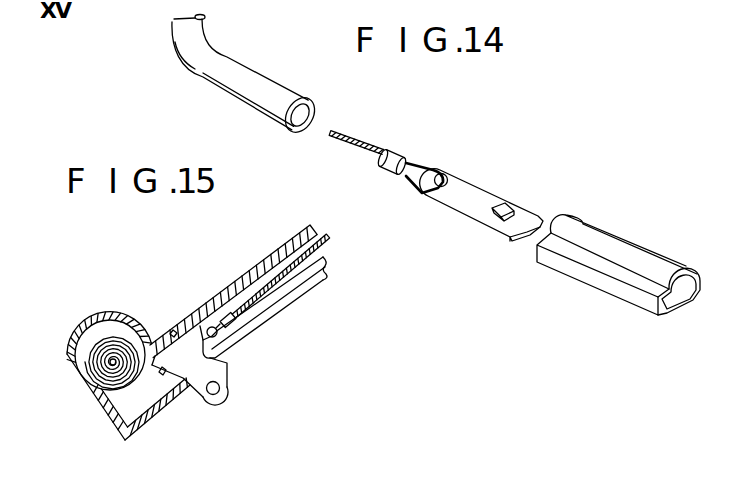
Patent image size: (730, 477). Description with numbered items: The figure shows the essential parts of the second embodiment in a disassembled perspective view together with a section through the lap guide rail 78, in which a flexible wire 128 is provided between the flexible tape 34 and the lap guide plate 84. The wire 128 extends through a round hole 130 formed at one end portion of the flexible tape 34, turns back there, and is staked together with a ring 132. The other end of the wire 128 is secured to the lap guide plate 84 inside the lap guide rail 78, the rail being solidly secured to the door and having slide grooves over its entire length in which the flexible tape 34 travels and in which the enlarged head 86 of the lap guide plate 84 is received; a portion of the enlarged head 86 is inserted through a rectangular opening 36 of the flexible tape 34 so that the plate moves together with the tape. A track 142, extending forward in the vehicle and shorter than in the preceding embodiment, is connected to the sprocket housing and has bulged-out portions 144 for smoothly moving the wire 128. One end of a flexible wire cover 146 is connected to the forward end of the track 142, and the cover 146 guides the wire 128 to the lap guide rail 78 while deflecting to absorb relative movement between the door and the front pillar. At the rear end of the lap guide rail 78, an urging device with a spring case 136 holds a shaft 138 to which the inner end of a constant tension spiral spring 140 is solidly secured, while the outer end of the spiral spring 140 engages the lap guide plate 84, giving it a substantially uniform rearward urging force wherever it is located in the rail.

In FIG. 14, the flexible wire cover 146 is at (279, 98).
In FIG. 14, the flexible wire 128 is at (360, 143).
In FIG. 15, the flexible wire 128 is at (292, 287).
In FIG. 14, the ring 132 is at (387, 173).
In FIG. 14, the round hole 130 is at (451, 172).
In FIG. 14, the flexible tape 34 is at (529, 211).
In FIG. 14, the rectangular opening 36 is at (496, 224).
In FIG. 14, the bulged-out portions 144 is at (629, 257).
In FIG. 14, the track 142 is at (597, 280).
In FIG. 15, the lap guide rail 78 is at (243, 277).
In FIG. 15, the spring case 136 is at (95, 312).
In FIG. 15, the constant tension spiral spring 140 is at (88, 340).
In FIG. 15, the shaft 138 is at (110, 363).
In FIG. 15, the enlarged head 86 is at (188, 325).
In FIG. 15, the lap guide plate 84 is at (217, 370).